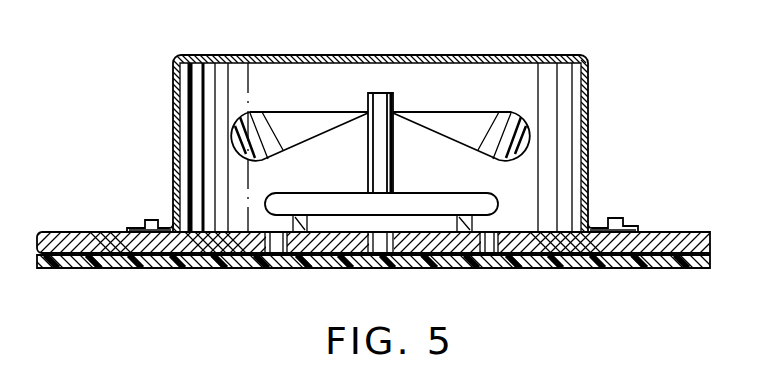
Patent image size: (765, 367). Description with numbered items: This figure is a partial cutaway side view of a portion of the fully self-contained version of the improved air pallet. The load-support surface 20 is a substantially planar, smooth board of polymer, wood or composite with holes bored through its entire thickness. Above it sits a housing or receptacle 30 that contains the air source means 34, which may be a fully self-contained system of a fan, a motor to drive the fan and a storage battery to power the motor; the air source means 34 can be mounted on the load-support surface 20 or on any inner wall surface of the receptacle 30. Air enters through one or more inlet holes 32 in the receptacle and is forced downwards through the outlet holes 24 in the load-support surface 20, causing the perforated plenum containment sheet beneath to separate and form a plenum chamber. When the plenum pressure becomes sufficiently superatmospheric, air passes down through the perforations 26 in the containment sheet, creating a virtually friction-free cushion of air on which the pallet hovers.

The load-support surface 20 is at (95, 242).
The outlet holes 24 is at (284, 262).
The perforations 26 is at (177, 262).
The housing or receptacle 30 is at (176, 158).
The inlet holes 32 is at (177, 95).
The air source means 34 is at (278, 127).